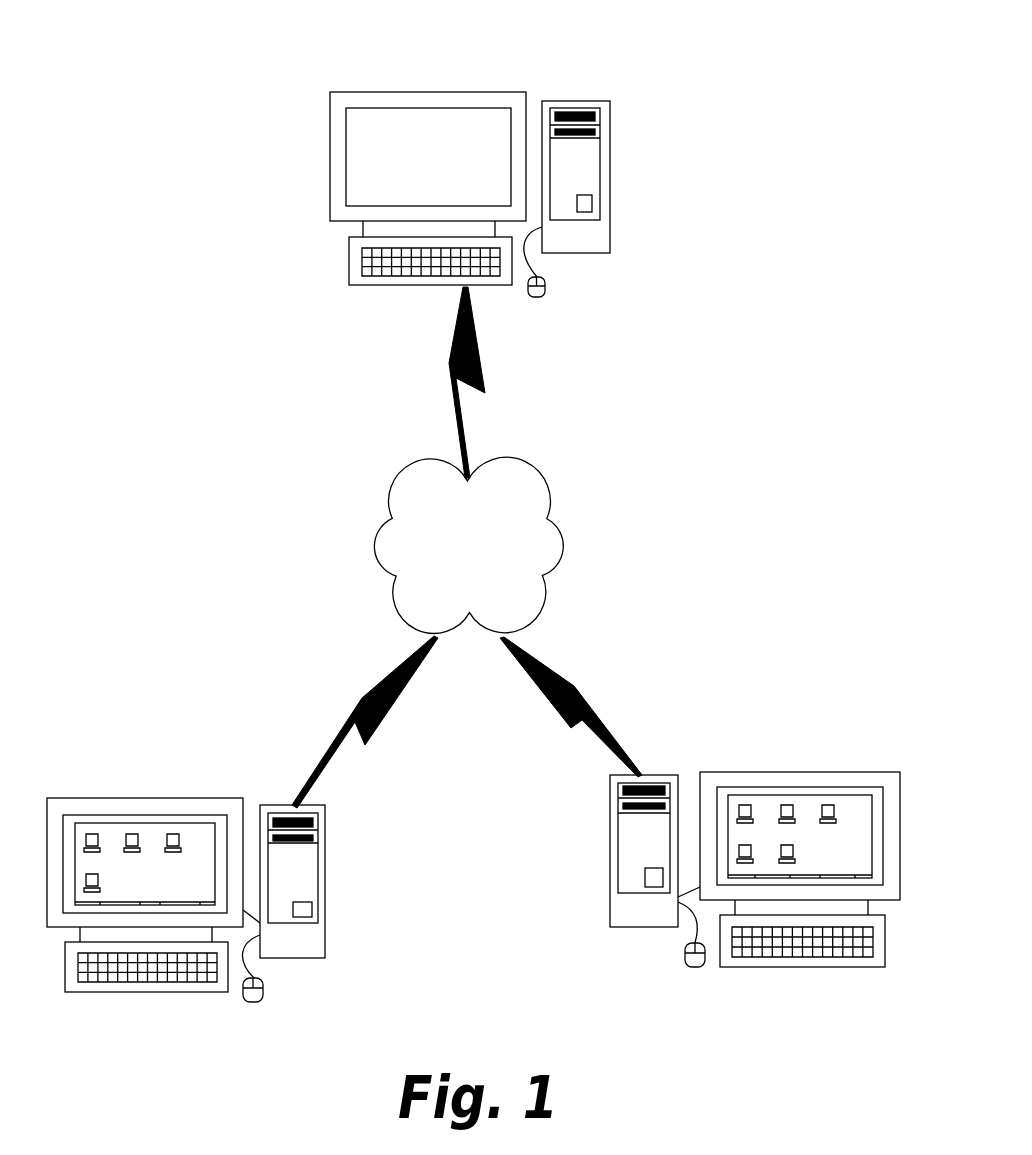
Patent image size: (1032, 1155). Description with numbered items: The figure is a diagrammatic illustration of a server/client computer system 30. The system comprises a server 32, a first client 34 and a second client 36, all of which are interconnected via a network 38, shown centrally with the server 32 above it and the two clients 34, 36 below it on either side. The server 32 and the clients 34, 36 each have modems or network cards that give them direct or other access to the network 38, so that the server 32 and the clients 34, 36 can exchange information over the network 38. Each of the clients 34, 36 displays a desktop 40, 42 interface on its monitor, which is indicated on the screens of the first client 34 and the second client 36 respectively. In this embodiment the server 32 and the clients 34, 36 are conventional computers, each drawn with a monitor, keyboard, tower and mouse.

The server/client computer system 30 is at (760, 280).
The server 32 is at (441, 71).
The first client 34 is at (162, 1078).
The second client 36 is at (826, 1059).
The network 38 is at (480, 577).
The desktop 40 is at (195, 830).
The desktop 42 is at (842, 797).